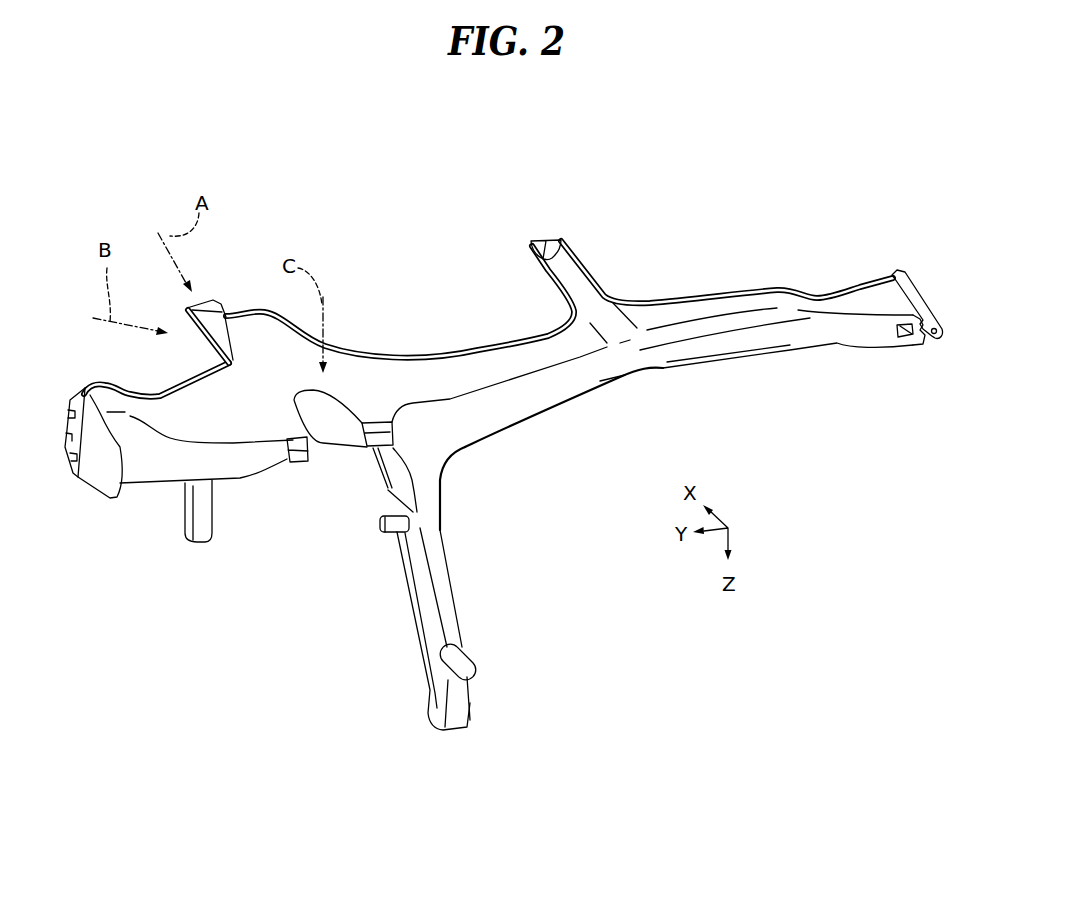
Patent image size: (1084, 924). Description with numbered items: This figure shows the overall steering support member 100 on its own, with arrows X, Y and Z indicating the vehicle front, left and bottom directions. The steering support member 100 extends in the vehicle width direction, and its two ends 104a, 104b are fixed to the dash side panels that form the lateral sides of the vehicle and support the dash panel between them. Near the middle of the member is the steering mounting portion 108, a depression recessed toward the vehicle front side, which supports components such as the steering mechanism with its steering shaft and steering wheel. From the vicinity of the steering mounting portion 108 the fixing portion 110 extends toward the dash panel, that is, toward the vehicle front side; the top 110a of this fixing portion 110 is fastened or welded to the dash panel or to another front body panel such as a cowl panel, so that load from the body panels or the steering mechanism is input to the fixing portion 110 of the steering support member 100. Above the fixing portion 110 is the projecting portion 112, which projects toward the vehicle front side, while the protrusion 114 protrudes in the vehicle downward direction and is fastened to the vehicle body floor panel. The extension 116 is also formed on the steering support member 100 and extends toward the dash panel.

The steering support member 100 is at (478, 240).
The end of steering support member 104a is at (93, 468).
The end of steering support member 104b is at (906, 270).
The steering mounting portion 108 is at (327, 417).
The fixing portion 110 is at (213, 345).
The top of fixing portion 110a is at (194, 299).
The projecting portion 112 is at (245, 330).
The protrusion 114 is at (430, 612).
The extension 116 is at (572, 277).